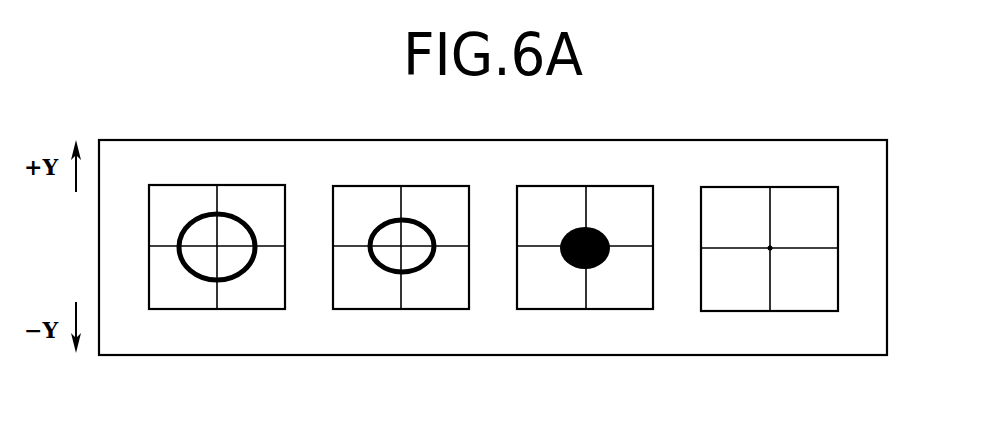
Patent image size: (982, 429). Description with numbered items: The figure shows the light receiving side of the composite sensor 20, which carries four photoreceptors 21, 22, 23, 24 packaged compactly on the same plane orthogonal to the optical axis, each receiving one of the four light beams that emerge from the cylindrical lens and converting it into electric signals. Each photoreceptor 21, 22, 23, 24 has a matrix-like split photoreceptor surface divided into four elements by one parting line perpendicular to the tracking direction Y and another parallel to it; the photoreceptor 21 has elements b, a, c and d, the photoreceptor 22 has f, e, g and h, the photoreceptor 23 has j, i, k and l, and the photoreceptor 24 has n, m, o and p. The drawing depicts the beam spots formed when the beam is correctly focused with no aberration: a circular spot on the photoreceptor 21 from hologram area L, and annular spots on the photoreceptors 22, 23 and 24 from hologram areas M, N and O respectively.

The composite sensor 20 is at (442, 356).
The photoreceptor 21 is at (758, 185).
The photoreceptor 22 is at (572, 183).
The photoreceptor 23 is at (387, 183).
The photoreceptor 24 is at (200, 183).